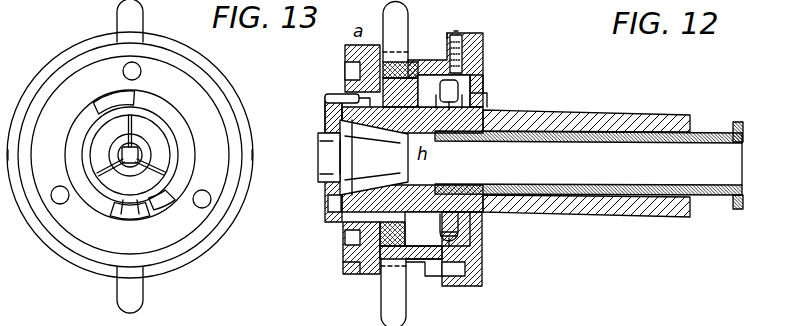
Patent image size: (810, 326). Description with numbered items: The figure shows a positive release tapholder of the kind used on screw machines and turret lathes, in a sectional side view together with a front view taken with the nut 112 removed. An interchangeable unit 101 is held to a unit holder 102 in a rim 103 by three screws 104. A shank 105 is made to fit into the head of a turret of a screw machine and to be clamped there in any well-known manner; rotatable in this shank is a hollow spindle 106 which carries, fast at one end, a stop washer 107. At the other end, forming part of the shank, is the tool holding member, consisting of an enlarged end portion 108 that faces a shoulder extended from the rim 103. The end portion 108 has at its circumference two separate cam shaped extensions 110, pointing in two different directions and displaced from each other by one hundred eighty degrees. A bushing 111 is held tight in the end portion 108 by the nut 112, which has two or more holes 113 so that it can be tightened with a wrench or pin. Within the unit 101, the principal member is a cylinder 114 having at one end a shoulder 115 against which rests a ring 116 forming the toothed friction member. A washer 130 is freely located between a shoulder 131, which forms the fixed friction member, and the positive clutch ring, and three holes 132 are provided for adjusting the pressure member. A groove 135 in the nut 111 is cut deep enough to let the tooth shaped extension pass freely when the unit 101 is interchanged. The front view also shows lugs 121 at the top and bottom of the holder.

In FIG. 12, the interchangeable unit 101 is at (433, 44).
In FIG. 12, the unit holder 102 is at (508, 110).
In FIG. 12, the rim 103 is at (484, 60).
In FIG. 12, the screws 104 is at (462, 36).
In FIG. 12, the shank 105 is at (608, 117).
In FIG. 12, the hollow spindle 106 is at (712, 207).
In FIG. 12, the stop washer 107 is at (737, 122).
In FIG. 12, the enlarged end portion 108 is at (455, 216).
In FIG. 12, the cam shaped extensions 110 is at (330, 96).
In FIG. 12, the bushing 111 is at (320, 170).
In FIG. 12, the nut 112 is at (325, 218).
In FIG. 12, the holes 113 is at (328, 207).
In FIG. 12, the cylinder 114 is at (352, 275).
In FIG. 12, the shoulder 115 is at (465, 268).
In FIG. 12, the ring 116 is at (444, 262).
In FIG. 13, the mounting lug 121 is at (118, 14).
In FIG. 12, the washer 130 is at (344, 249).
In FIG. 12, the shoulder 131 is at (345, 237).
In FIG. 12, the holes 132 is at (345, 72).
In FIG. 12, the groove 135 is at (313, 117).